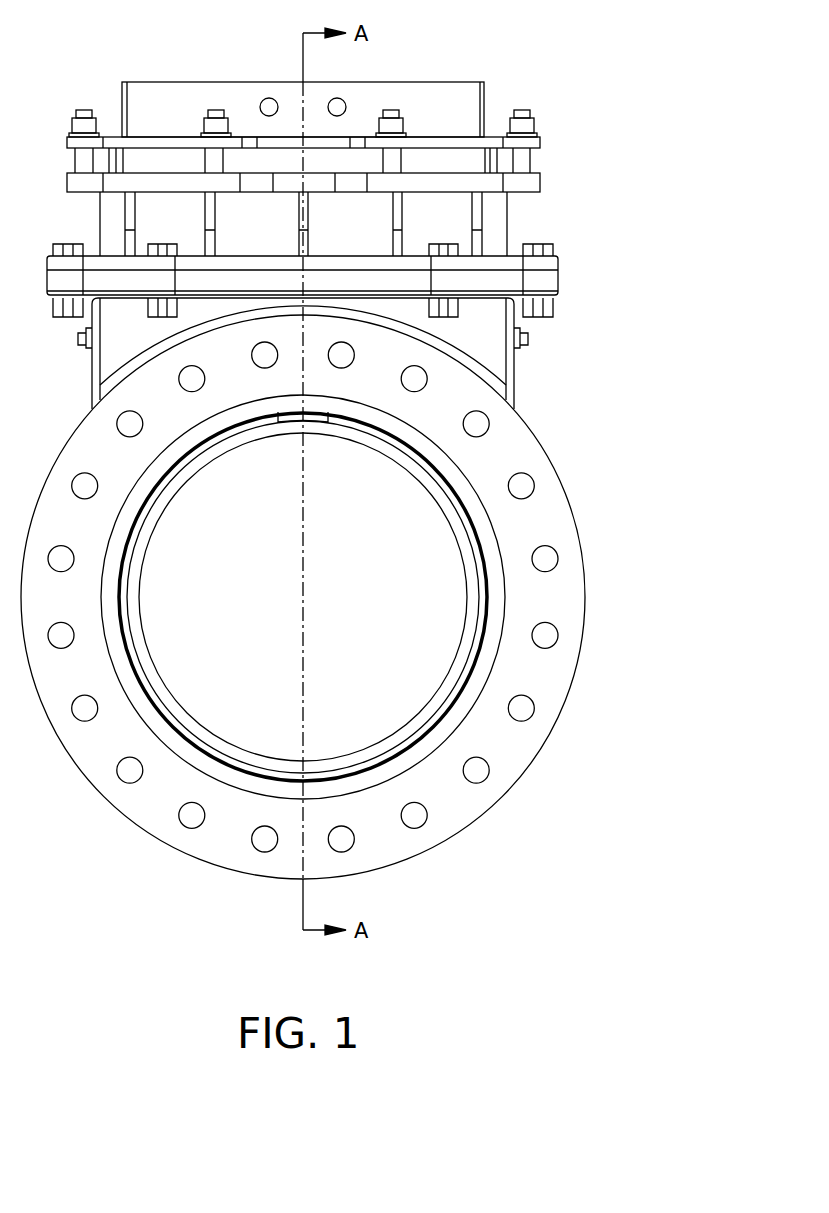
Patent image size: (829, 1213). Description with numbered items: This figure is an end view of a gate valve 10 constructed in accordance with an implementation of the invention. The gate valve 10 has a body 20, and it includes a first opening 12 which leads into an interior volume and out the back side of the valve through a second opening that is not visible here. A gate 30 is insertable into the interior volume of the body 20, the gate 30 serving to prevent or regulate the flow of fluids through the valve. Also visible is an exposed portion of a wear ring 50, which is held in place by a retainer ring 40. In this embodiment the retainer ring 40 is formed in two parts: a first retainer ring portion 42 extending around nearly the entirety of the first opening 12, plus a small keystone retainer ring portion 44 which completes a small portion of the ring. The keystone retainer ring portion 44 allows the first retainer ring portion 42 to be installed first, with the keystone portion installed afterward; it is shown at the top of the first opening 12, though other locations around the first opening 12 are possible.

The gate valve 10 is at (628, 402).
The first opening 12 is at (376, 623).
The body 20 is at (583, 627).
The gate 30 is at (423, 82).
The retainer ring 40 is at (128, 576).
The first retainer ring portion 42 is at (130, 657).
The keystone retainer ring portion 44 is at (316, 421).
The wear ring 50 is at (237, 750).